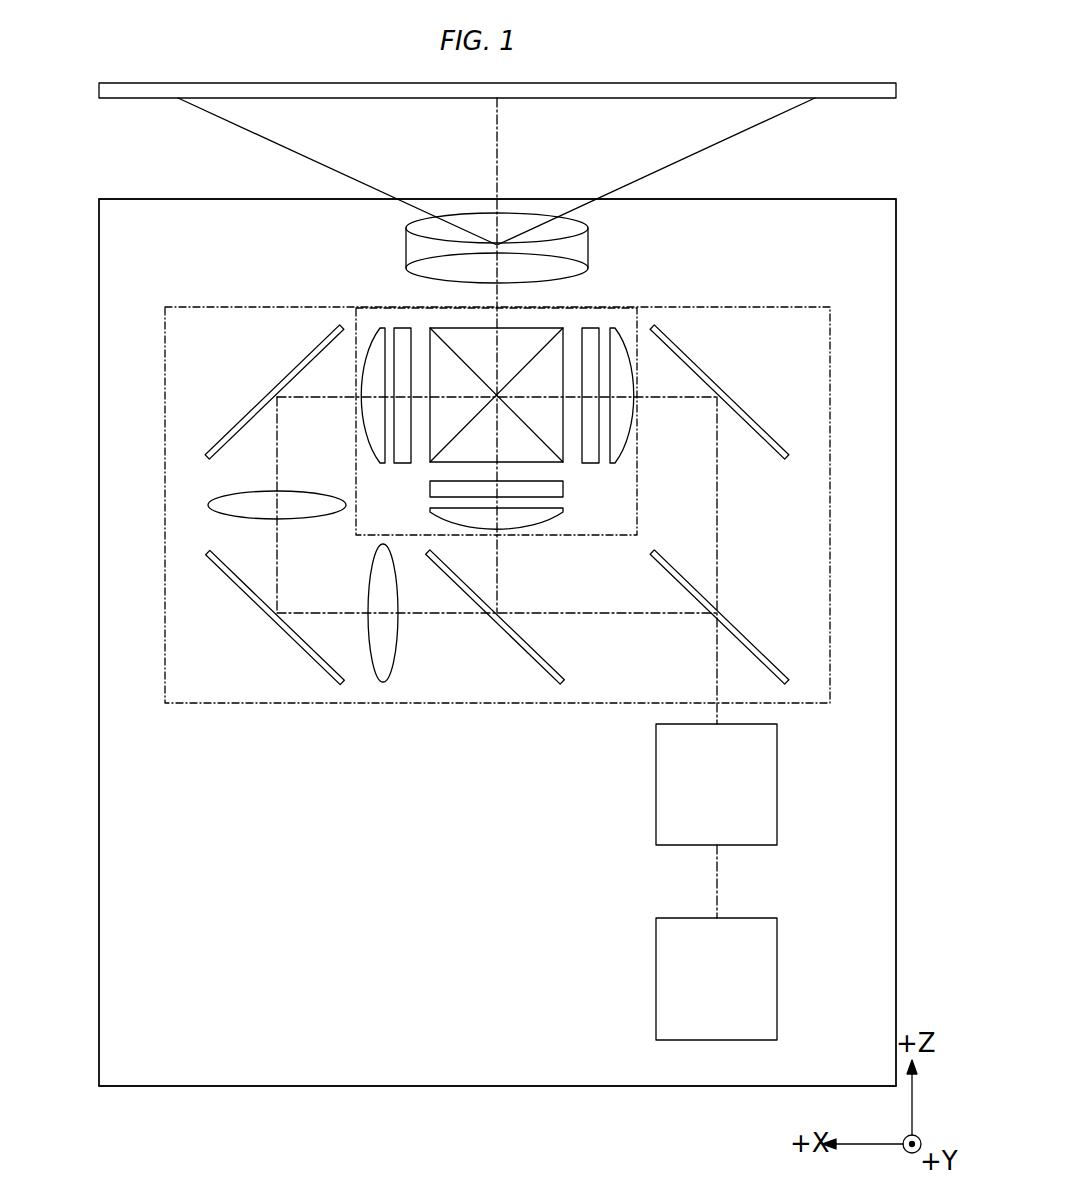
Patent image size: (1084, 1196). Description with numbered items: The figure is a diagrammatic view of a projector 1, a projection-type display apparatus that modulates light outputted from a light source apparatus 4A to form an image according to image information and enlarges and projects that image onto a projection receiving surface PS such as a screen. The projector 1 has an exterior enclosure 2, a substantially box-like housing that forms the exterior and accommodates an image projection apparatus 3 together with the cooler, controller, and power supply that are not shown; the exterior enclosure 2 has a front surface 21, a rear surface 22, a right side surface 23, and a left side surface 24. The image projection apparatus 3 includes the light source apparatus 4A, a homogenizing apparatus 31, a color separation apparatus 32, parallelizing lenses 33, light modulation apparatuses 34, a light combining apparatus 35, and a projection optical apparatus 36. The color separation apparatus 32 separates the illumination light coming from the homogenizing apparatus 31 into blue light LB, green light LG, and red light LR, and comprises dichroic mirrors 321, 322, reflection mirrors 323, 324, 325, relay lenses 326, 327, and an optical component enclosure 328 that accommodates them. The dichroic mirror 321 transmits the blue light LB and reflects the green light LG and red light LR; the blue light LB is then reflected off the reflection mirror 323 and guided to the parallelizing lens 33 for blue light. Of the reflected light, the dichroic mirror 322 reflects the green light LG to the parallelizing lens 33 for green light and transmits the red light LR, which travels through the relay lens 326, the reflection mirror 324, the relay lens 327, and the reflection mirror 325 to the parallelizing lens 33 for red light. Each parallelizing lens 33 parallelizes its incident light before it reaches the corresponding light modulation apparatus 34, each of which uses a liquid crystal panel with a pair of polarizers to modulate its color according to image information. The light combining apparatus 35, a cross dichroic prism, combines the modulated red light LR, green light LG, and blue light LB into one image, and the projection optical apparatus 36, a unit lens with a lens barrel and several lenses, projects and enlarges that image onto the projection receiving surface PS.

The projector 1 is at (84, 190).
The exterior enclosure 2 is at (897, 252).
The front surface 21 is at (815, 199).
The rear surface 22 is at (205, 1087).
The right side surface 23 is at (897, 590).
The left side surface 24 is at (99, 605).
The image projection apparatus 3 is at (205, 1005).
The homogenizing apparatus 31 is at (778, 784).
The color separation apparatus 32 is at (478, 704).
The dichroic mirror 321 is at (752, 645).
The dichroic mirror 322 is at (515, 650).
The reflection mirror 323 is at (735, 406).
The reflection mirror 324 is at (250, 603).
The reflection mirror 325 is at (247, 410).
The relay lens 326 is at (380, 662).
The relay lens 327 is at (240, 497).
The optical component enclosure 328 is at (800, 307).
The parallelizing lenses 33 is at (372, 328).
The light modulation apparatuses 34 is at (400, 328).
The light combining apparatus 35 is at (470, 336).
The projection optical apparatus 36 is at (406, 246).
The light source apparatus 4A is at (778, 974).
The projection receiving surface PS is at (873, 99).
The red light LR is at (310, 612).
The green light LG is at (500, 572).
The blue light LB is at (726, 522).